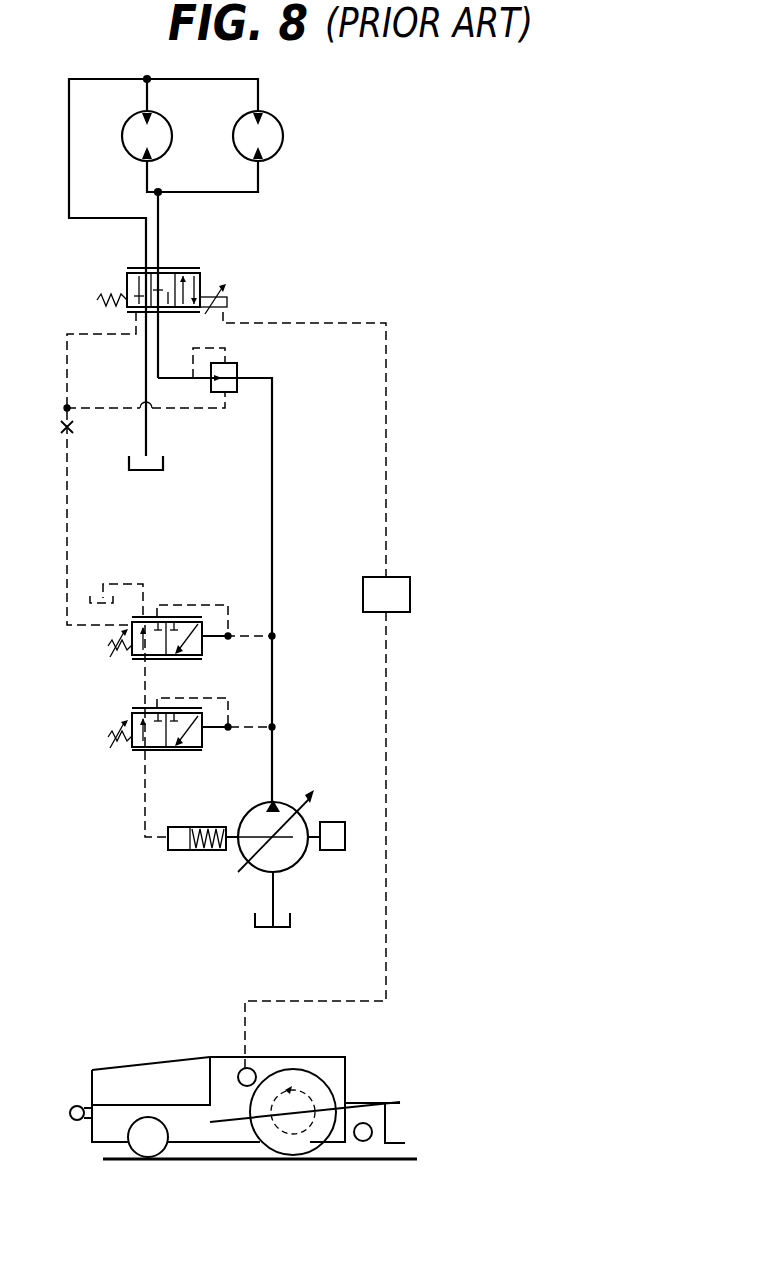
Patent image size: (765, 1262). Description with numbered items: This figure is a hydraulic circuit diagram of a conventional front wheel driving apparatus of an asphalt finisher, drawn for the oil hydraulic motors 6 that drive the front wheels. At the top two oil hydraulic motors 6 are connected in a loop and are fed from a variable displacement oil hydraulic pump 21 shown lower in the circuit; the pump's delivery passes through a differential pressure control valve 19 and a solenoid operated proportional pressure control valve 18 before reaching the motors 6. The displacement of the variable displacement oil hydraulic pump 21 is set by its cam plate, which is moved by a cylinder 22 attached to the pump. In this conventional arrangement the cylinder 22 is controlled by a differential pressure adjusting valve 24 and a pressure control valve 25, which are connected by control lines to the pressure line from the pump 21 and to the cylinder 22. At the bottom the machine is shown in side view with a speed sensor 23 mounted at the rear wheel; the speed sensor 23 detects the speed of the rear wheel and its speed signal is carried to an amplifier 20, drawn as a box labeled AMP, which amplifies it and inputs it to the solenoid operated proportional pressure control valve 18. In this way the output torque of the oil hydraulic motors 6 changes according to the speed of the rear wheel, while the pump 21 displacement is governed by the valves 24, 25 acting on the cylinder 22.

The oil hydraulic motors 6 is at (172, 127).
The solenoid operated proportional pressure control valve 18 is at (200, 280).
The differential pressure control valve 19 is at (237, 371).
The amplifier 20 is at (410, 577).
The variable displacement oil hydraulic pump 21 is at (284, 802).
The cylinder 22 is at (170, 850).
The speed sensor 23 is at (242, 1070).
The differential pressure adjusting valve 24 is at (130, 656).
The pressure control valve 25 is at (130, 748).